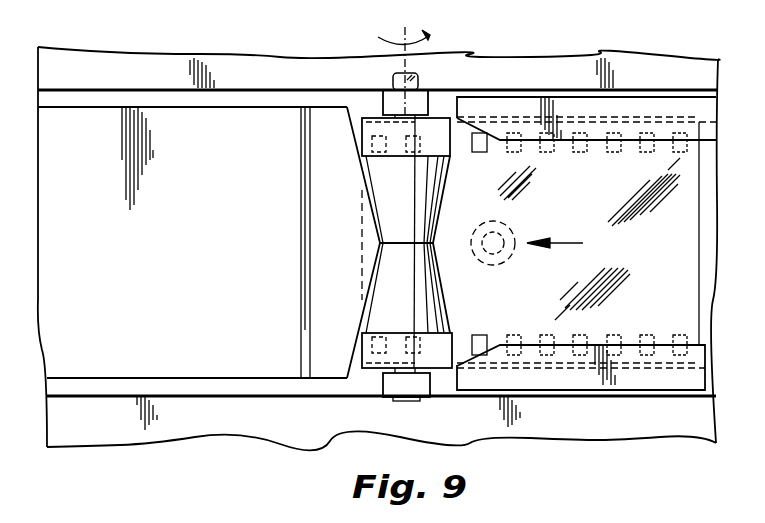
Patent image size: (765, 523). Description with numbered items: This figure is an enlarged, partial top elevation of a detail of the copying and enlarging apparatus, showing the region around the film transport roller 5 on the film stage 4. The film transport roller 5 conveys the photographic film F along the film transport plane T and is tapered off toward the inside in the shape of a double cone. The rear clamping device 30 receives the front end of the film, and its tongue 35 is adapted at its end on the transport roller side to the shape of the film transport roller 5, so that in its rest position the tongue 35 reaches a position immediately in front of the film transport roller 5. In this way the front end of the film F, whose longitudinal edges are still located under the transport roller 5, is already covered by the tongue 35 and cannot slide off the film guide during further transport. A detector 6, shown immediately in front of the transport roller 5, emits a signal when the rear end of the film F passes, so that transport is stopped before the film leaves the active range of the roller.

The tongue 35 is at (93, 125).
The rear clamping device 30 is at (256, 107).
The film transport plane T is at (294, 97).
The film stage 4 is at (520, 77).
The film transport roller 5 is at (430, 290).
The detector 6 is at (507, 257).
The photographic film F is at (360, 241).